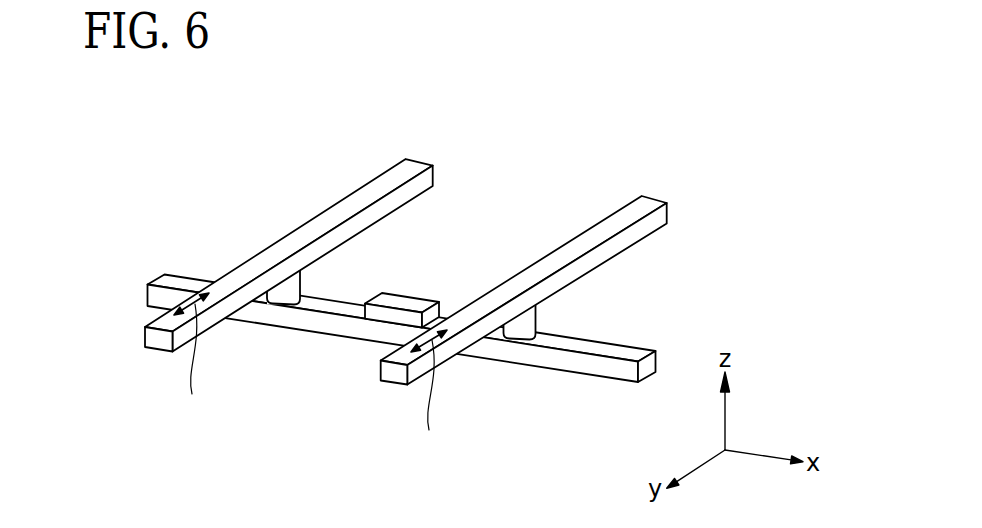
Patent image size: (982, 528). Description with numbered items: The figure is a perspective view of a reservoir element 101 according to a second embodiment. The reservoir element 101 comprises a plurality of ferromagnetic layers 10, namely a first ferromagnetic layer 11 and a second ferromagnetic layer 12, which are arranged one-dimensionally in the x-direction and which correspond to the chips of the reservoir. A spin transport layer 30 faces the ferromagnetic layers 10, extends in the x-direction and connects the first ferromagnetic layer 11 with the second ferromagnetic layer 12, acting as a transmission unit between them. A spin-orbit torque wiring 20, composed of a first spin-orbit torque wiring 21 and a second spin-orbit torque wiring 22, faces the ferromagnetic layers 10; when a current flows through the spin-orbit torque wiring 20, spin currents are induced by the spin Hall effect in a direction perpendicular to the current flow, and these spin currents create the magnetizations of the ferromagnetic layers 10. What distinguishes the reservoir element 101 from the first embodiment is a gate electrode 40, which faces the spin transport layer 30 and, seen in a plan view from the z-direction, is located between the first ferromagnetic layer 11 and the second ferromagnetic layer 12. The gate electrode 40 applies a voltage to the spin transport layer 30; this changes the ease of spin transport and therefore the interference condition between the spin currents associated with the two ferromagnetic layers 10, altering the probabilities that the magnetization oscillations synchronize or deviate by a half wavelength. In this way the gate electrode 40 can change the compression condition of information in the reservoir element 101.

The reservoir element 101 is at (467, 261).
The ferromagnetic layers 10 is at (402, 350).
The first ferromagnetic layer 11 is at (285, 293).
The second ferromagnetic layer 12 is at (523, 332).
The spin-orbit torque wiring 20 is at (406, 250).
The first spin-orbit torque wiring 21 is at (352, 205).
The second spin-orbit torque wiring 22 is at (592, 238).
The spin transport layer 30 is at (617, 351).
The gate electrode 40 is at (402, 300).